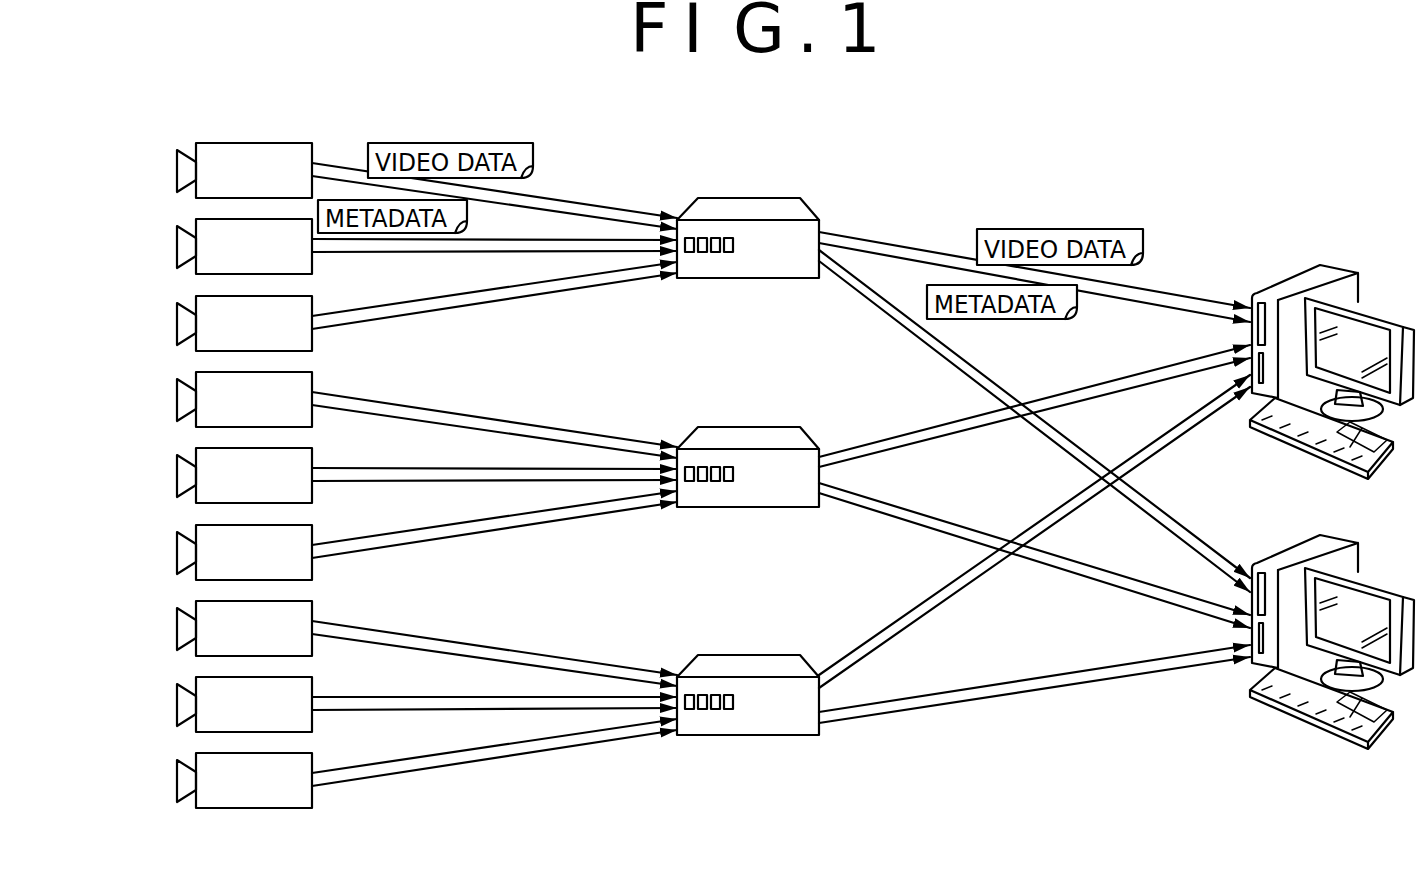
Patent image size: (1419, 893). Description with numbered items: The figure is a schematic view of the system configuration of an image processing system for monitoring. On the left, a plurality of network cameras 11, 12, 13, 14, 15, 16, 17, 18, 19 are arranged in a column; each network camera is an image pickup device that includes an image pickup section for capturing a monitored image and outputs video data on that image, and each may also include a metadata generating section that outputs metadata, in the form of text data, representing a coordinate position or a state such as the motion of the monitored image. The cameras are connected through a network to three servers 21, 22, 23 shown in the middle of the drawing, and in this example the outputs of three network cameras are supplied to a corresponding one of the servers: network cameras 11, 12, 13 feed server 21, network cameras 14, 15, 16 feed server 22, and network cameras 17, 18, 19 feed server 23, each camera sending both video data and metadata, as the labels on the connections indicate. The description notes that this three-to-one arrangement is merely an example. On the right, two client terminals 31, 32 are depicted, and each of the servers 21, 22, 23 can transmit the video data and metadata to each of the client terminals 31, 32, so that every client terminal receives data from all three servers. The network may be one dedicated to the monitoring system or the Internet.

The network camera 11 is at (177, 172).
The network camera 12 is at (177, 248).
The network camera 13 is at (177, 325).
The network camera 14 is at (177, 401).
The network camera 15 is at (177, 477).
The network camera 16 is at (177, 554).
The network camera 17 is at (177, 630).
The network camera 18 is at (177, 706).
The network camera 19 is at (177, 782).
The server 21 is at (752, 198).
The server 22 is at (752, 427).
The server 23 is at (752, 655).
The client terminal 31 is at (1382, 300).
The client terminal 32 is at (1382, 570).